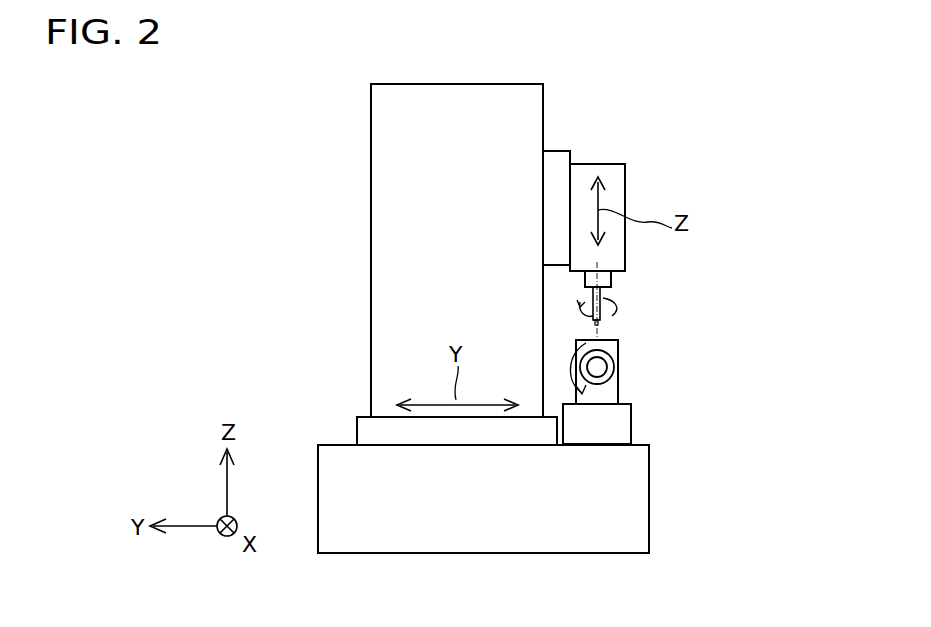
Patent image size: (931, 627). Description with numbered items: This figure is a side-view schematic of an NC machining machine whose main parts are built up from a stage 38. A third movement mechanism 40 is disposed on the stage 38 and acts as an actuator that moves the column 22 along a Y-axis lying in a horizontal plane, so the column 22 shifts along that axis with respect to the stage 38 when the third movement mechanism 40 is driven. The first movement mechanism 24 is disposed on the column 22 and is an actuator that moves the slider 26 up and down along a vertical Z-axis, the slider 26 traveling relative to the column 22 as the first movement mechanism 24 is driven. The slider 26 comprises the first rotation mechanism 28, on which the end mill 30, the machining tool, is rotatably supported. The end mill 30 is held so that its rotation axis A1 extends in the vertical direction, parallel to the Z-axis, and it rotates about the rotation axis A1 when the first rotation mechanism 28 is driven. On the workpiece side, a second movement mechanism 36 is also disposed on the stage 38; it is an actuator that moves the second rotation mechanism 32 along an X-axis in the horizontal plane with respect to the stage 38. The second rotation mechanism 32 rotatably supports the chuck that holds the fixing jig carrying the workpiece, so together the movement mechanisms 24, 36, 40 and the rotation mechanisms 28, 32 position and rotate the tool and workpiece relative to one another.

The column 22 is at (382, 131).
The first movement mechanism 24 is at (556, 158).
The slider 26 is at (613, 180).
The first rotation mechanism 28 is at (611, 282).
The end mill 30 is at (604, 300).
The rotation axis A1 is at (600, 332).
The second rotation mechanism 32 is at (605, 388).
The second movement mechanism 36 is at (618, 420).
The stage 38 is at (633, 487).
The third movement mechanism 40 is at (378, 436).